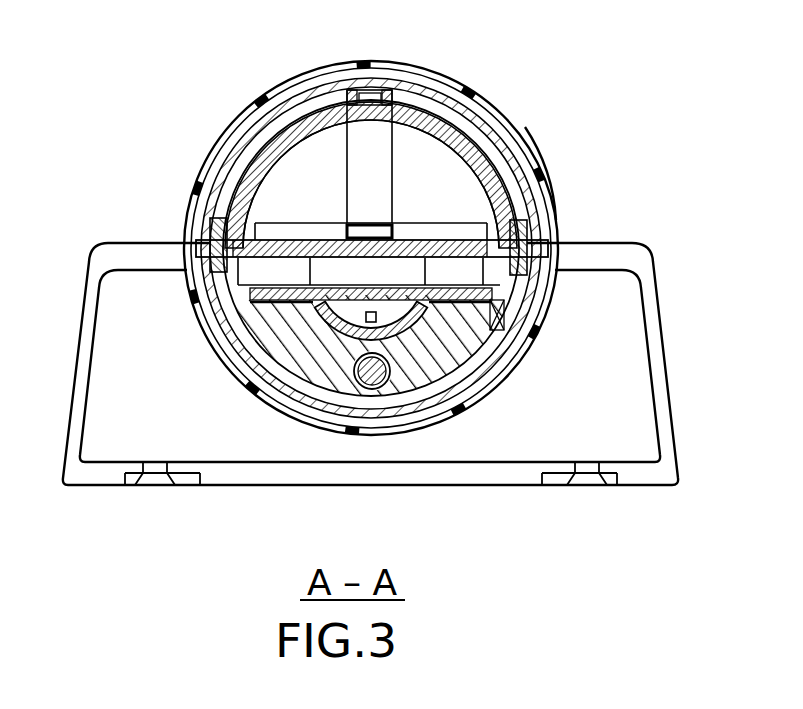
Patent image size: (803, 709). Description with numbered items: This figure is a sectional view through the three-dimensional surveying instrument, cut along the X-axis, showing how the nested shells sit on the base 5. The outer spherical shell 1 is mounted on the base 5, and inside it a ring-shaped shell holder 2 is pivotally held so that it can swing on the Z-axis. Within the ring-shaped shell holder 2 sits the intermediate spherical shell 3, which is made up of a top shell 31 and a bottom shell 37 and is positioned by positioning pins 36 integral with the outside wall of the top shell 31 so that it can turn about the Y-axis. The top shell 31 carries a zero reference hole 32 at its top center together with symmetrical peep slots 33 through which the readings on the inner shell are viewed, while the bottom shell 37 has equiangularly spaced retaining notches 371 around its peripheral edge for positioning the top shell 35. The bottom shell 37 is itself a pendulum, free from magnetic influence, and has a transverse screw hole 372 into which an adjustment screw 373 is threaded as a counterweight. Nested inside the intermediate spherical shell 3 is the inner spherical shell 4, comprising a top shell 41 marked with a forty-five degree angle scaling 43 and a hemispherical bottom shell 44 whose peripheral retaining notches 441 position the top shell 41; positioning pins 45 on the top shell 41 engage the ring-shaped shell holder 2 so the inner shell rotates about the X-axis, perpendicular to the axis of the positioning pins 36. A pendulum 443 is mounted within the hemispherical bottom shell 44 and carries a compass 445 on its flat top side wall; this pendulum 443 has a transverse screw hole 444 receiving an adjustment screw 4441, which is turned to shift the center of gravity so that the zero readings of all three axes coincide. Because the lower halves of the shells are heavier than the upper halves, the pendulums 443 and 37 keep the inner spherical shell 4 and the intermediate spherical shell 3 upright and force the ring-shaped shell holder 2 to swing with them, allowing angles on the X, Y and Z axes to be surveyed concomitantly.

The outer spherical shell 1 is at (532, 143).
The ring-shaped shell holder 2 is at (542, 190).
The intermediate spherical shell 3 is at (407, 80).
The top shell 31 is at (512, 123).
The zero reference hole 32 is at (372, 95).
The peep slots 33 is at (434, 110).
The top shell 35 is at (476, 138).
The positioning pins 36 is at (553, 223).
The bottom shell 37 is at (460, 347).
The retaining notches 371 is at (503, 310).
The transverse screw hole 372 is at (368, 390).
The adjustment screw 373 is at (391, 382).
The inner spherical shell 4 is at (286, 83).
The top shell 41 is at (312, 118).
The 45° angle scaling 43 is at (243, 106).
The hemispherical bottom shell 44 is at (260, 345).
The retaining notches 441 is at (208, 266).
The pendulum 443 is at (330, 380).
The transverse screw hole 444 is at (250, 290).
The adjustment screw 4441 is at (292, 365).
The compass 445 is at (340, 234).
The positioning pins 45 is at (375, 225).
The base 5 is at (645, 243).